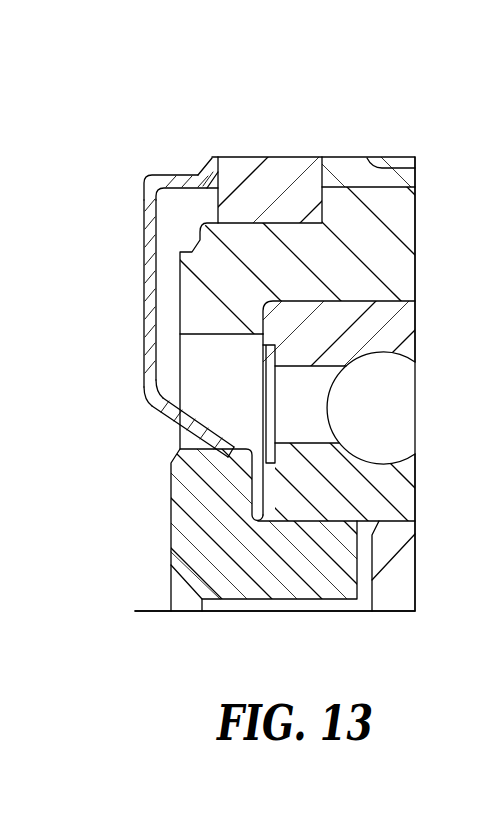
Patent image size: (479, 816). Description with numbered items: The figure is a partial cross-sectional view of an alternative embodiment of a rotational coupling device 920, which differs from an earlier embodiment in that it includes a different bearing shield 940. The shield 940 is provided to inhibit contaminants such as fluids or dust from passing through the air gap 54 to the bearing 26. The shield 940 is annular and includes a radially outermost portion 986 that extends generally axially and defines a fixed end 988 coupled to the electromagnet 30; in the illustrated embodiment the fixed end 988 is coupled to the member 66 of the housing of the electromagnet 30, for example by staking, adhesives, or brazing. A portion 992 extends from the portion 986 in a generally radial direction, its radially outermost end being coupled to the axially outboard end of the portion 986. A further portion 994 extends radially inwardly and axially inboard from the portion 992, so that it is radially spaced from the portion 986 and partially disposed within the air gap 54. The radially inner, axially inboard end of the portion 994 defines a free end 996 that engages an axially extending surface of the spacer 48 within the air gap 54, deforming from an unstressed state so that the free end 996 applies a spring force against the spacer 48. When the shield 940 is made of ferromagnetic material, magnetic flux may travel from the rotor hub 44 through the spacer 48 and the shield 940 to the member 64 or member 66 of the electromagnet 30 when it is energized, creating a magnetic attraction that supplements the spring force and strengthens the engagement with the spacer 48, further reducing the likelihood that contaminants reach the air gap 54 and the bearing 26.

The rotational coupling device 920 is at (137, 115).
The fixed end 988 is at (200, 153).
The radially outermost portion 986 is at (168, 176).
The member 66 is at (277, 185).
The electromagnet 30 is at (342, 167).
The member 64 is at (380, 228).
The portion 992 is at (146, 291).
The bearing shield 940 is at (133, 353).
The portion 994 is at (162, 410).
The free end 996 is at (222, 457).
The air gap 54 is at (228, 410).
The bearing 26 is at (398, 415).
The rotor hub 44 is at (400, 563).
The spacer 48 is at (320, 582).